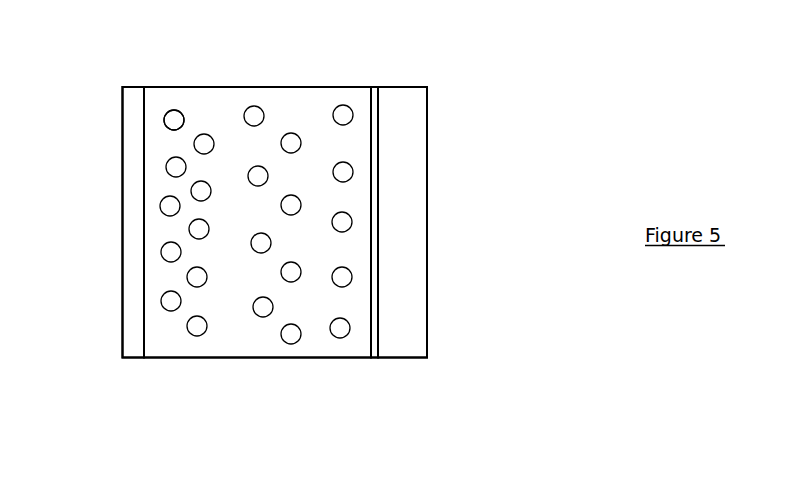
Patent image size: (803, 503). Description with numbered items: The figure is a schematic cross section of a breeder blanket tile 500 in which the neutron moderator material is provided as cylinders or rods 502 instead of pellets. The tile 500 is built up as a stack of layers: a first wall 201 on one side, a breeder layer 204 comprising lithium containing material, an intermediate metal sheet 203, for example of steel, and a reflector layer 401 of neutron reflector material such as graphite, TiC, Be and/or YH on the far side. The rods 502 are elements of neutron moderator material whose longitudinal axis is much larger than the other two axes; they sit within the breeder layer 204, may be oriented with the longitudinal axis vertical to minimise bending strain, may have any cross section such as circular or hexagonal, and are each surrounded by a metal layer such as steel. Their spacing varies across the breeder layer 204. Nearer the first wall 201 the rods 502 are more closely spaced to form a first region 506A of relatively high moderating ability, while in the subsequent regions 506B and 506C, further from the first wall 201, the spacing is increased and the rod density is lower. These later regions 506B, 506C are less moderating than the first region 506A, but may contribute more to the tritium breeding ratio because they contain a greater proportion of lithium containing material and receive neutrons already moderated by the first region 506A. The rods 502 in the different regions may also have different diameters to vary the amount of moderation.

The blanket tile 500 is at (98, 76).
The first wall 201 is at (130, 348).
The intermediate metal sheet 203 is at (375, 123).
The breeder layer 204 is at (261, 214).
The reflector layer 401 is at (402, 173).
The rods 502 is at (182, 112).
The first region 506A is at (155, 362).
The second region 506B is at (235, 362).
The third region 506C is at (315, 362).